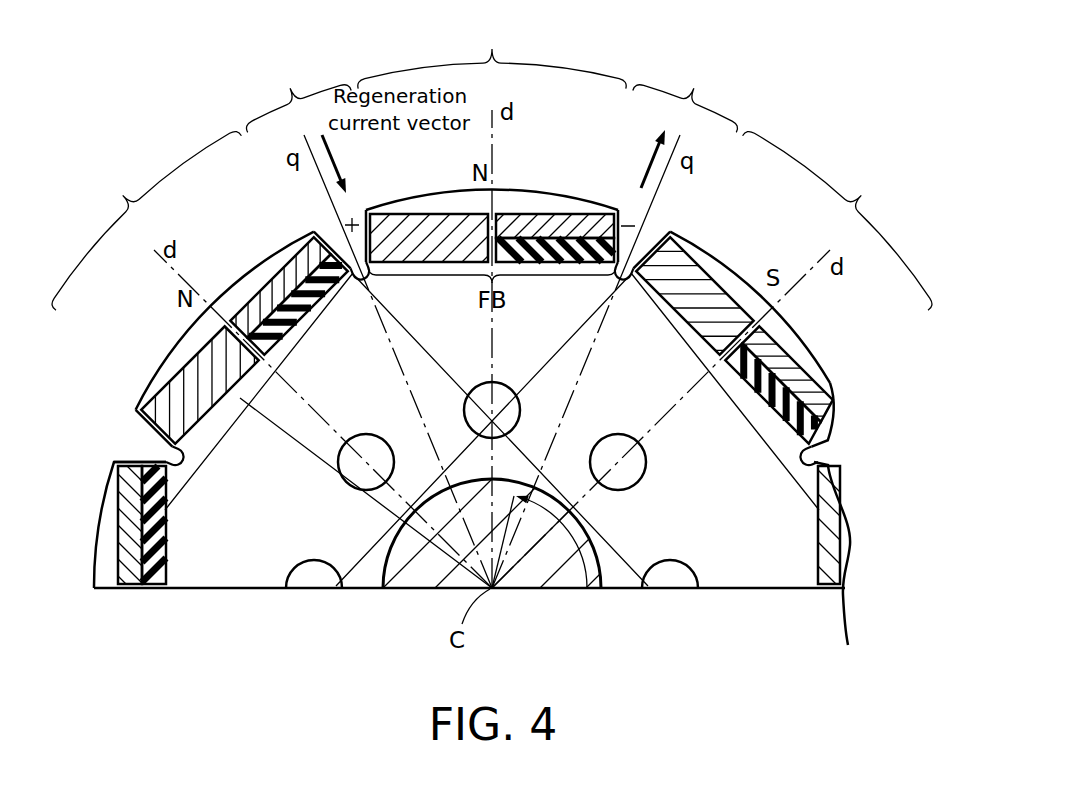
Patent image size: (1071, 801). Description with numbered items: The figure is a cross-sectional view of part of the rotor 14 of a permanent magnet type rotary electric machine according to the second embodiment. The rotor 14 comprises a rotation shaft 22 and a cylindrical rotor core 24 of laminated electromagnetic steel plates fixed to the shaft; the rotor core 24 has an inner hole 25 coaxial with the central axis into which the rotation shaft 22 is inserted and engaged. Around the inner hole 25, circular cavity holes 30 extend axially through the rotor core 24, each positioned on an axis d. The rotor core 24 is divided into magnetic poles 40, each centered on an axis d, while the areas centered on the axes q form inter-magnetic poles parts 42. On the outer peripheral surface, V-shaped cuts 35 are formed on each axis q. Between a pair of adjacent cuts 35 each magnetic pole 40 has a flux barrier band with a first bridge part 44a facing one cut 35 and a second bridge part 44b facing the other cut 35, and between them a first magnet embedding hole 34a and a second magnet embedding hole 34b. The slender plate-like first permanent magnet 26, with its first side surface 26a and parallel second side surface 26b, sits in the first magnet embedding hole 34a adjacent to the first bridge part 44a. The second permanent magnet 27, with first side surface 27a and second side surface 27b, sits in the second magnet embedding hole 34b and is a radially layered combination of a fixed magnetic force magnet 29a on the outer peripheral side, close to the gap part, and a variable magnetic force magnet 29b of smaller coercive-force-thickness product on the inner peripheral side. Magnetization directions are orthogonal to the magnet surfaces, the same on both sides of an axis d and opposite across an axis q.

The rotor 14 is at (500, 380).
The rotation shaft 22 is at (560, 578).
The rotor core 24 is at (483, 399).
The inner hole 25 is at (392, 572).
The first permanent magnet 26 is at (490, 359).
The first side surface 26a is at (446, 214).
The second side surface 26b is at (462, 266).
The second permanent magnet 27 is at (532, 340).
The first side surface 27a is at (508, 215).
The second side surface 27b is at (578, 266).
The fixed magnetic force magnet 29a is at (557, 227).
The variable magnetic force magnet 29b is at (598, 246).
The cavity hole 30 is at (634, 470).
The first magnet embedding hole 34a is at (426, 256).
The second magnet embedding hole 34b is at (548, 254).
The cut 35 is at (352, 258).
The magnetic pole 40 is at (492, 163).
The inter-magnetic poles part 42 is at (491, 92).
The first bridge part 44a is at (366, 211).
The second bridge part 44b is at (616, 212).